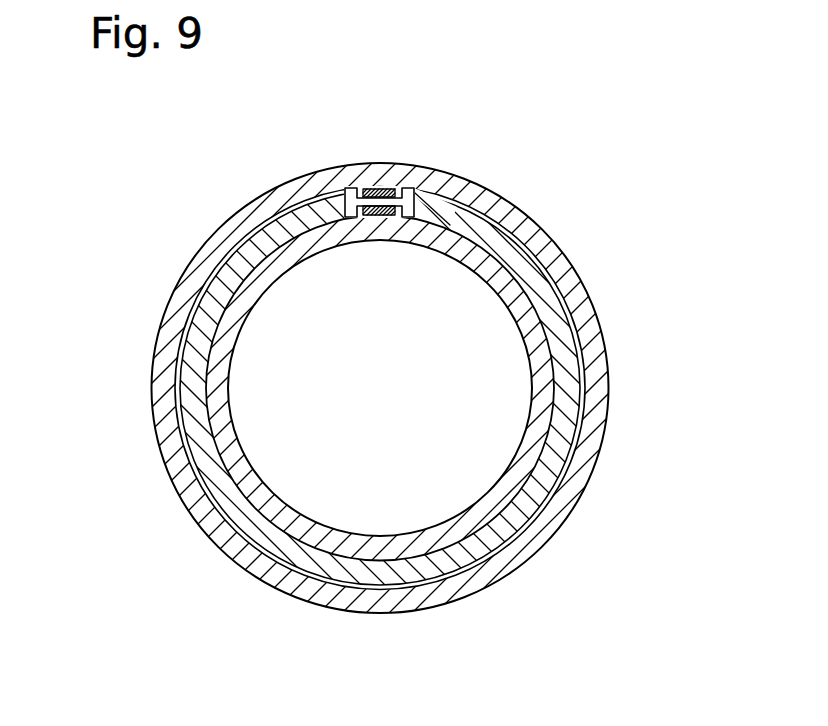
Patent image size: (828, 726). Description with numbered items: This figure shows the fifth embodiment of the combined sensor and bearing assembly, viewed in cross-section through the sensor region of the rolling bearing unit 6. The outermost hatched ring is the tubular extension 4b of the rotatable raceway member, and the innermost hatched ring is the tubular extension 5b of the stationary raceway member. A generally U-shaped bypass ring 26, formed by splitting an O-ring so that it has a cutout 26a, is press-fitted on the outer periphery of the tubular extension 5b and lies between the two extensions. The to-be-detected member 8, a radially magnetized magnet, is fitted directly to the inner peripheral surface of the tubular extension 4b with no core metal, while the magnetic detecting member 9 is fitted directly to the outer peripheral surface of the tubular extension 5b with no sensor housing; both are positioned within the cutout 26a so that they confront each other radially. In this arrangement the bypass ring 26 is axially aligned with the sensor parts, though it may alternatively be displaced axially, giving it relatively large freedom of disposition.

The rolling bearing unit 6 is at (390, 134).
The to-be-detected member 8 is at (369, 187).
The magnetic detecting member 9 is at (400, 164).
The bypass ring 26 is at (465, 218).
The cutout 26a is at (355, 188).
The tubular extension 4b is at (551, 247).
The tubular extension 5b is at (512, 292).